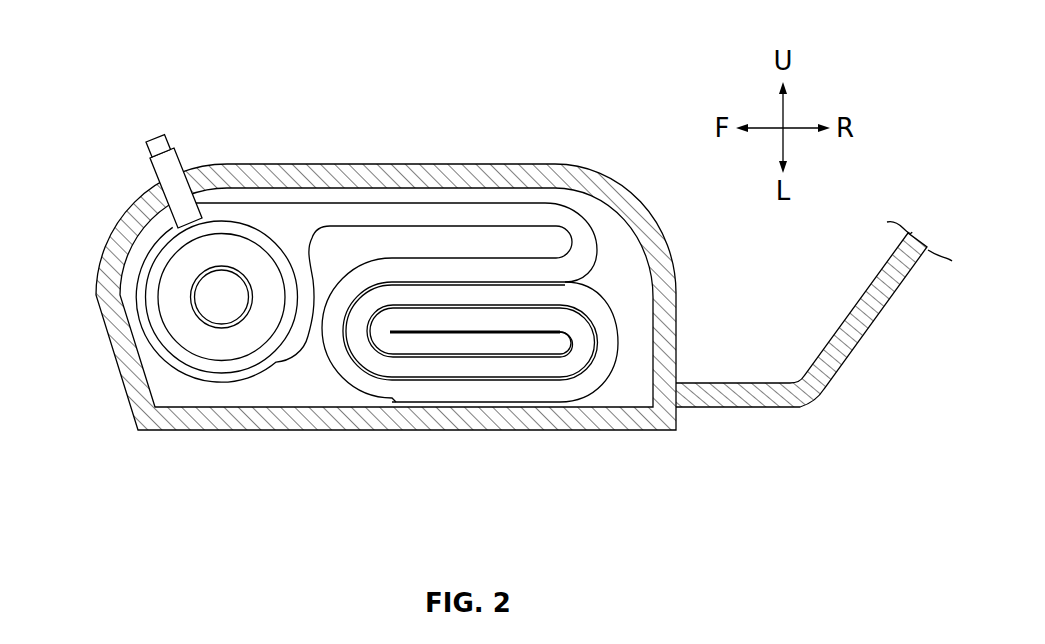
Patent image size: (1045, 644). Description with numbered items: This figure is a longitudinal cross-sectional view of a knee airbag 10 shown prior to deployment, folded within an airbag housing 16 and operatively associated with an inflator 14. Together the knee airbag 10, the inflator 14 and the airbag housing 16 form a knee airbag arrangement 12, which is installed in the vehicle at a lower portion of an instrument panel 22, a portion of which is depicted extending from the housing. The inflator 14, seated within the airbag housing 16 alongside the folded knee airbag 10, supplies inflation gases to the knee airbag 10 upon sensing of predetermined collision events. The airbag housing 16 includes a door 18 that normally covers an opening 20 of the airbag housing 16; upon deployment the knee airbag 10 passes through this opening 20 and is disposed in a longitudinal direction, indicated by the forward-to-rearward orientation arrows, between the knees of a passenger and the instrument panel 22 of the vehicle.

The knee airbag 10 is at (607, 292).
The knee airbag arrangement 12 is at (359, 255).
The inflator 14 is at (170, 304).
The airbag housing 16 is at (102, 220).
The door 18 is at (352, 432).
The opening 20 is at (655, 382).
The instrument panel 22 is at (880, 310).